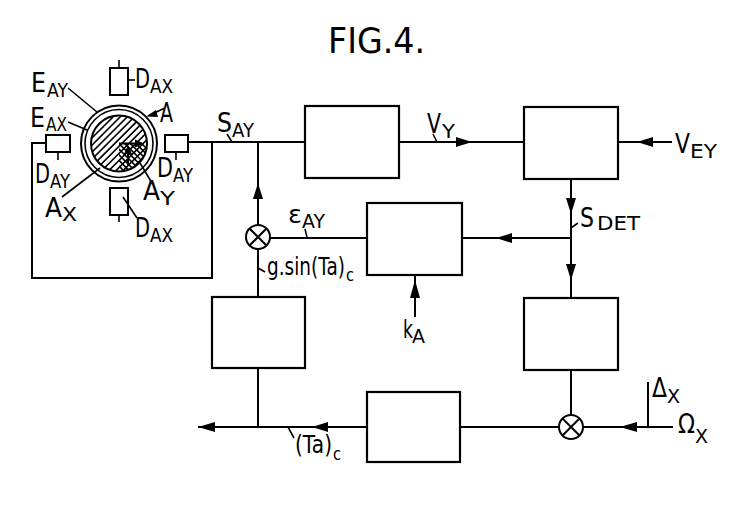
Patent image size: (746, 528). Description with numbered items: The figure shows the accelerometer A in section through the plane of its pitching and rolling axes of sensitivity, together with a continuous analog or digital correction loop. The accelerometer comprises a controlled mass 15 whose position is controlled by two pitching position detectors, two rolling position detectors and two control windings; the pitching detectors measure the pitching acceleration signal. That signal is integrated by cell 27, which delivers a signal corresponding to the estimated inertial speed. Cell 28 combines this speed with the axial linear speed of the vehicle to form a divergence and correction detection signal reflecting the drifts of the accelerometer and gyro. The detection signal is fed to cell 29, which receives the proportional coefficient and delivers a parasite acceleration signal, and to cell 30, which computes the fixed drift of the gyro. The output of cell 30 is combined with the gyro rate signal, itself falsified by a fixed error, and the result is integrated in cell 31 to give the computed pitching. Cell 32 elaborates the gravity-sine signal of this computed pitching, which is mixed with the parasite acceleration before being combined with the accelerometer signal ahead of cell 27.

The controlled mass 15 is at (110, 122).
The integrating cell 27 is at (350, 112).
The combining cell 28 is at (570, 113).
The proportional-term cell 29 is at (452, 215).
The gyro drift computing cell 30 is at (612, 333).
The integrating cell 31 is at (410, 453).
The sine-function cell 32 is at (221, 332).